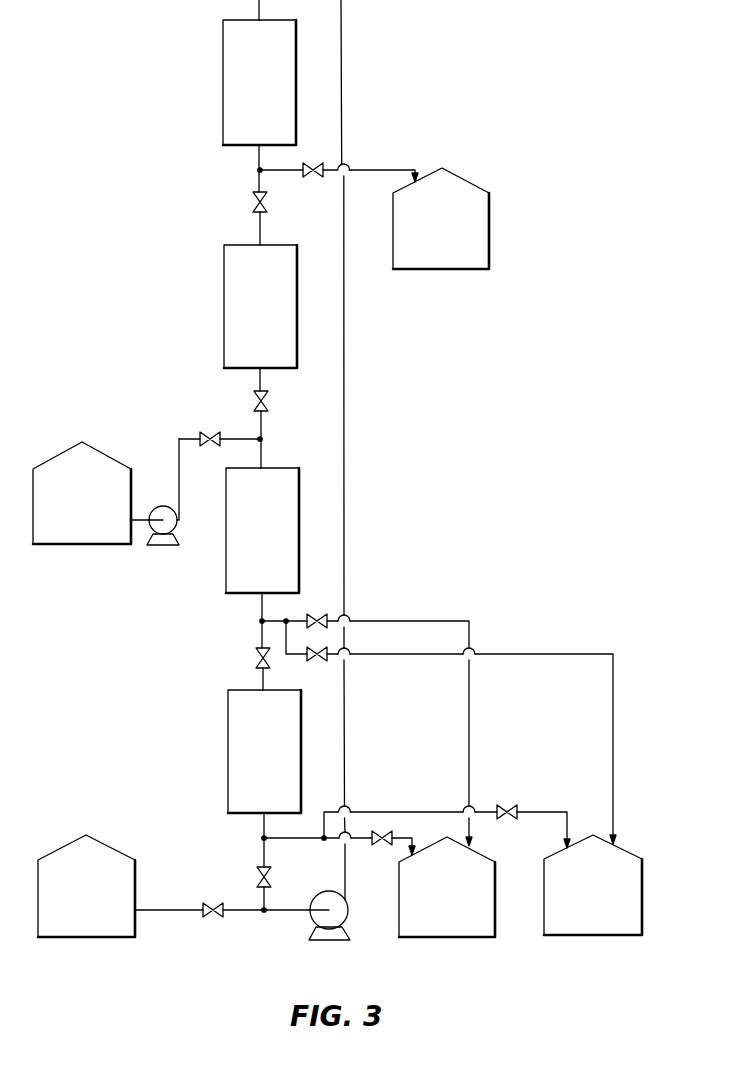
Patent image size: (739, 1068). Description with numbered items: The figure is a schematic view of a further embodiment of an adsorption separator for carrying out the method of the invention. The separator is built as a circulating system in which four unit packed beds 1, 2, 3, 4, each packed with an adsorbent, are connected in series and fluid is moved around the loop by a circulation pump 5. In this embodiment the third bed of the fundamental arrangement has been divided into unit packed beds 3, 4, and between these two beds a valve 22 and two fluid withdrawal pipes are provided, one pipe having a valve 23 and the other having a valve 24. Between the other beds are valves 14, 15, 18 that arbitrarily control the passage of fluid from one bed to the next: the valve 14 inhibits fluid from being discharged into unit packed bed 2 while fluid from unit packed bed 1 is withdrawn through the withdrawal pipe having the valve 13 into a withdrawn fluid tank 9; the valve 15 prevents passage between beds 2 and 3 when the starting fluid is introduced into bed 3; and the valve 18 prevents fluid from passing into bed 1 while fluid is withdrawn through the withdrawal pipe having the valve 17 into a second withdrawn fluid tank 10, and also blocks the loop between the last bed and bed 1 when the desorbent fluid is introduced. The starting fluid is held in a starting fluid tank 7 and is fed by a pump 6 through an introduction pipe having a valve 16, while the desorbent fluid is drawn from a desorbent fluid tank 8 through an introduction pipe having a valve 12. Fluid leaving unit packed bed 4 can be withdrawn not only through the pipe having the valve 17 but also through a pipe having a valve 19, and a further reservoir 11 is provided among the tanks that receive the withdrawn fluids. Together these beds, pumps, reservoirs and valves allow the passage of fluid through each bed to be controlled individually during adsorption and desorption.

The unit packed bed 1 is at (253, 83).
The unit packed bed 2 is at (254, 306).
The unit packed bed 3 is at (256, 523).
The unit packed bed 4 is at (258, 751).
The circulation pump 5 is at (347, 916).
The pump 6 is at (178, 526).
The starting fluid tank 7 is at (76, 503).
The desorbent fluid tank 8 is at (80, 893).
The withdrawn fluid tank 9 is at (435, 228).
The withdrawn fluid tank 10 is at (436, 893).
The reservoir 11 is at (583, 891).
The valve 12 is at (215, 917).
The valve 13 is at (311, 178).
The valve 14 is at (252, 199).
The valve 15 is at (268, 401).
The valve 16 is at (209, 429).
The valve 17 is at (380, 844).
The valve 18 is at (256, 870).
The valve 19 is at (509, 803).
The valve 22 is at (255, 656).
The valve 23 is at (318, 610).
The valve 24 is at (318, 665).